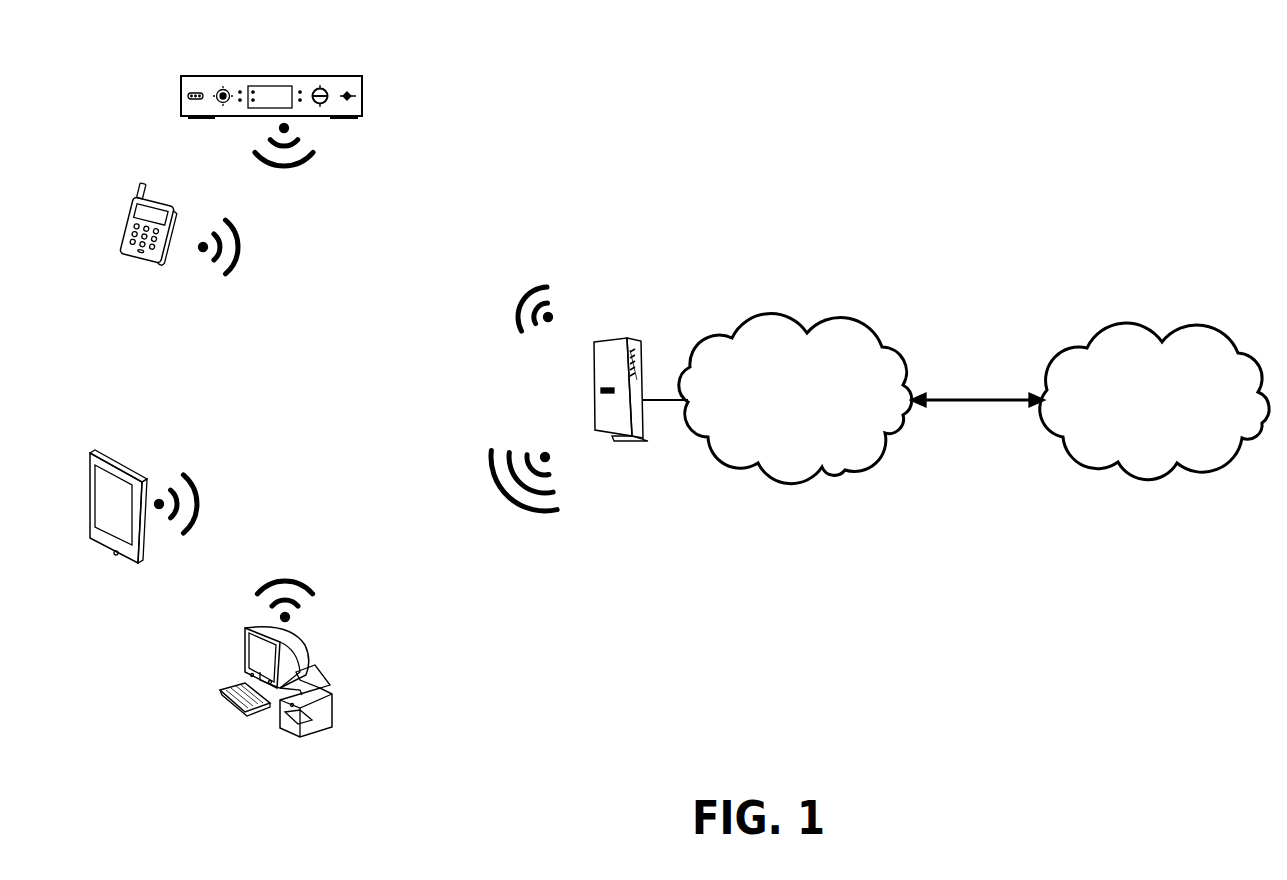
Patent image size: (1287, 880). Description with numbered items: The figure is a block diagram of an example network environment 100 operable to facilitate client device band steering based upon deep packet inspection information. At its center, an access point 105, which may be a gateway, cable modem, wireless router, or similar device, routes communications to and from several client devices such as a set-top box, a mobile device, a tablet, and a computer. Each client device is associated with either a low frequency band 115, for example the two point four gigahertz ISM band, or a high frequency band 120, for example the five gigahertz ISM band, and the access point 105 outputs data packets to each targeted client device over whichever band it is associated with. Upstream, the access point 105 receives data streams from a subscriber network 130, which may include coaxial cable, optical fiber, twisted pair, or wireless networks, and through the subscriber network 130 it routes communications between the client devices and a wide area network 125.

The network environment 100 is at (1123, 769).
The access point 105 is at (618, 338).
The low frequency band 115 is at (532, 514).
The high frequency band 120 is at (530, 270).
The wide area network 125 is at (1140, 482).
The subscriber network 130 is at (757, 470).